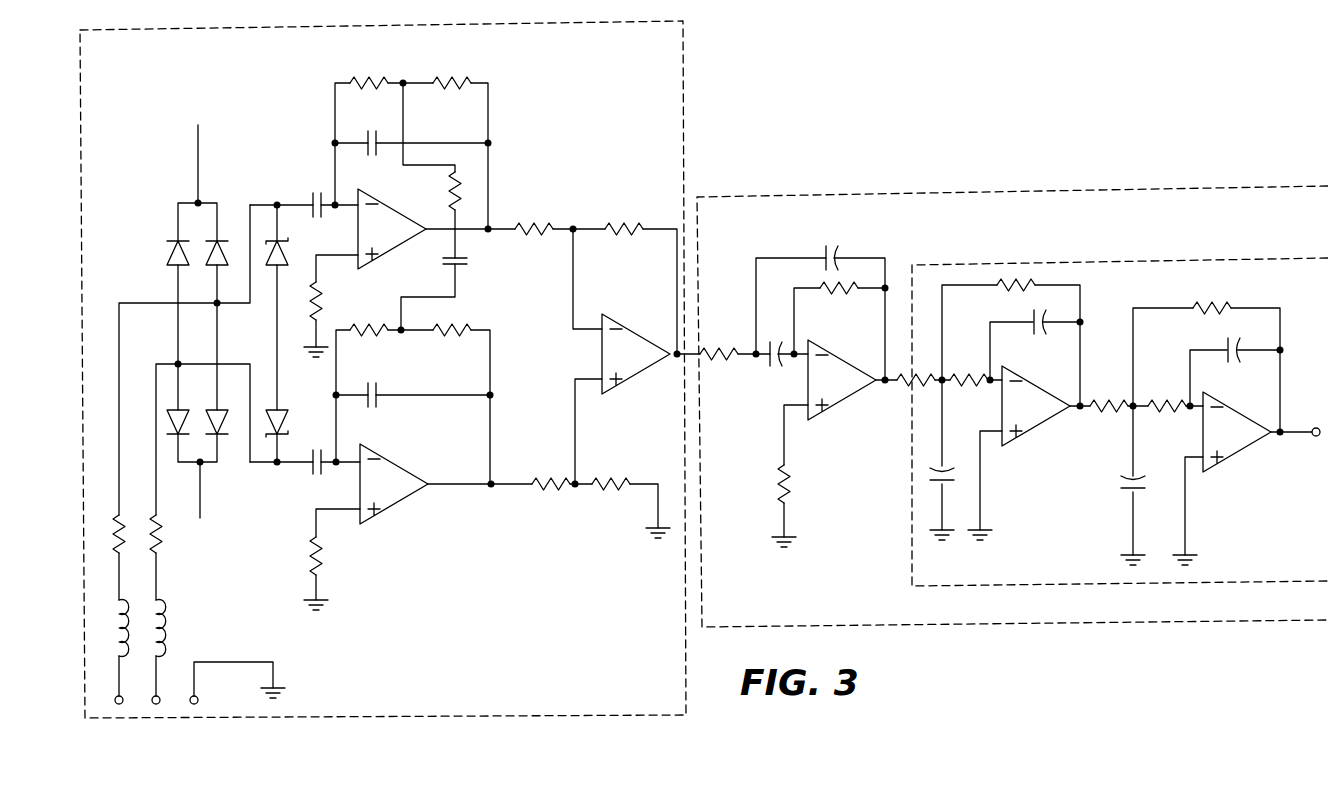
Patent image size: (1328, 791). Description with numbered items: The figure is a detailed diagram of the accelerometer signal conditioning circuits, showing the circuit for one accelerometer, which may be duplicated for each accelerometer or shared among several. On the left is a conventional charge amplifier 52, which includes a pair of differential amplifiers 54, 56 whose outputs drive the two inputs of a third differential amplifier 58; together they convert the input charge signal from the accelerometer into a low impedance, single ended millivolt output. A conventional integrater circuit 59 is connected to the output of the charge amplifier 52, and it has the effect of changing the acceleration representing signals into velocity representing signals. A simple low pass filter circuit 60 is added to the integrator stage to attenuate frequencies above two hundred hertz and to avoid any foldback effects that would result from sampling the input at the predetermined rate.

The charge amplifier 52 is at (577, 717).
The differential amplifier 54 is at (383, 207).
The differential amplifier 56 is at (392, 462).
The third differential amplifier 58 is at (650, 310).
The integrater circuit 59 is at (988, 630).
The low pass filter circuit 60 is at (910, 550).